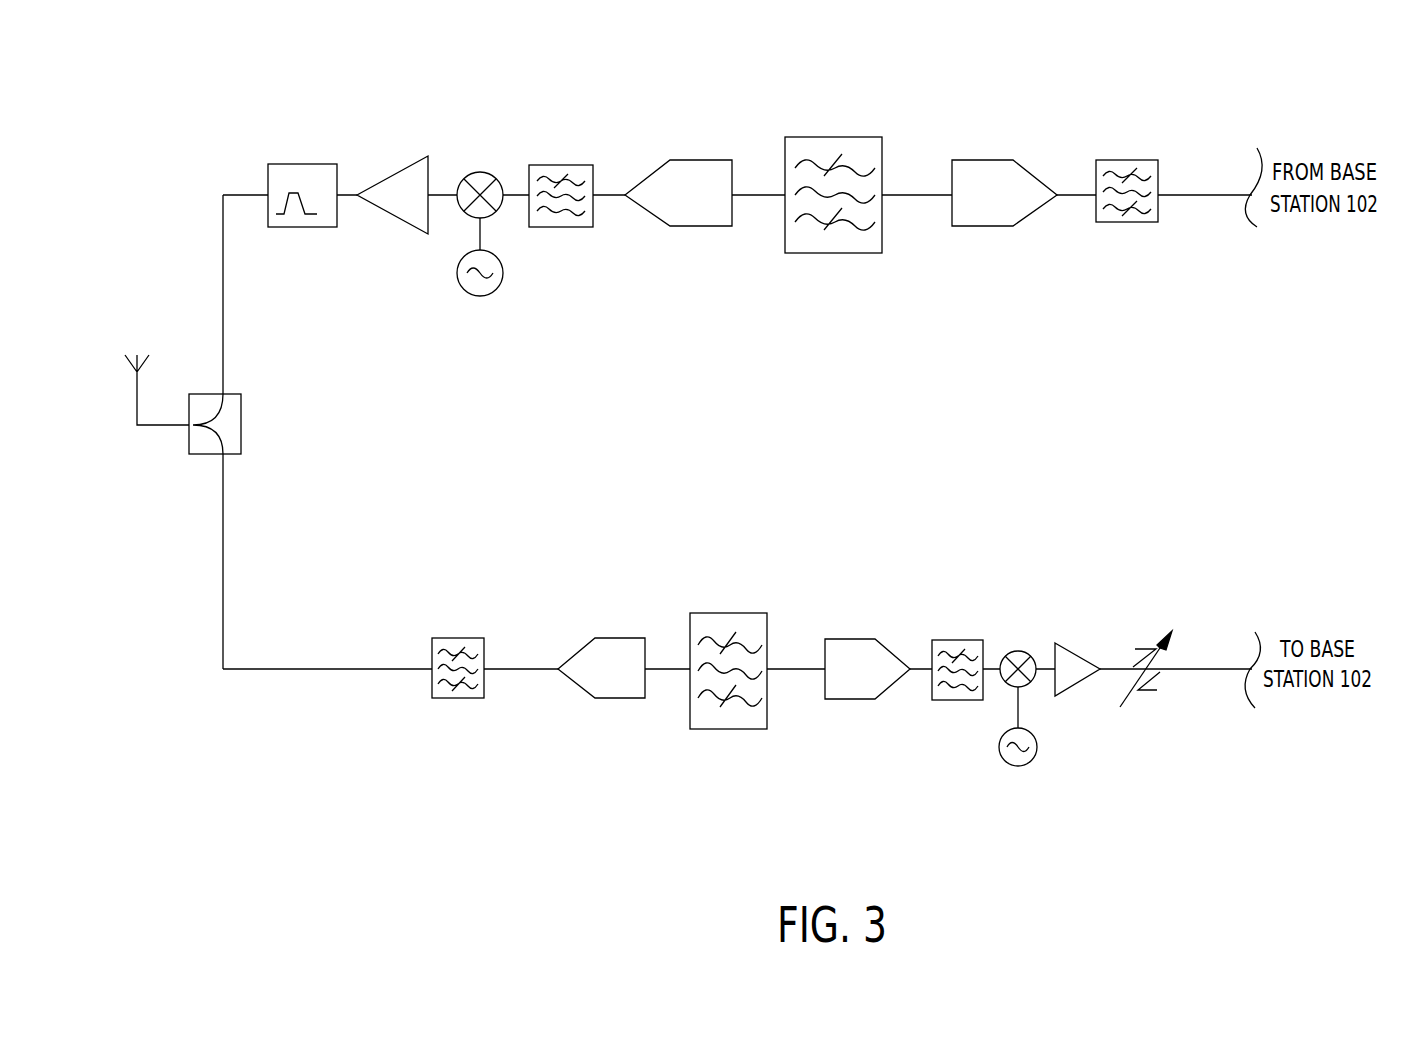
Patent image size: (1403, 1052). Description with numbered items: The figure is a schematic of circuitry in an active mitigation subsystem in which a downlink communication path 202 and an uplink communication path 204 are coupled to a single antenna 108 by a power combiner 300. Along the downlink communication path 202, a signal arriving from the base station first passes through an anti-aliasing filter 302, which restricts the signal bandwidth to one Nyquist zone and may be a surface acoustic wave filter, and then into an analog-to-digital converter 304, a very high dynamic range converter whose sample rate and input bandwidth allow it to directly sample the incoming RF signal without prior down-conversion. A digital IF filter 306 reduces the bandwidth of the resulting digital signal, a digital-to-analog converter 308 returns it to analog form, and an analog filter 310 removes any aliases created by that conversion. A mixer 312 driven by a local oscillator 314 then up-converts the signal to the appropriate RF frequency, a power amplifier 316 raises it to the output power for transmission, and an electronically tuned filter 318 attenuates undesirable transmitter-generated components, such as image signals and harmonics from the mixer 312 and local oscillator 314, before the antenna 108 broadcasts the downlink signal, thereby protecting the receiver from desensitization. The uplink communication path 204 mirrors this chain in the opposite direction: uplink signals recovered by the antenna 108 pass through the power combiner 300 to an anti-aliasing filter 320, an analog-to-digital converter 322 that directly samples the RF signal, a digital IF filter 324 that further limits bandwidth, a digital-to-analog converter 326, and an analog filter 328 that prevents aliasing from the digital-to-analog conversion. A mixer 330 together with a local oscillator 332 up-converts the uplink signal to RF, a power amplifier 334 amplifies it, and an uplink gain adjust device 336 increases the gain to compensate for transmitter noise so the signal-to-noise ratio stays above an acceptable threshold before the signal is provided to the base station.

The antenna 108 is at (138, 307).
The downlink communication path 202 is at (756, 90).
The uplink communication path 204 is at (820, 772).
The power combiner 300 is at (243, 424).
The anti-aliasing filter 302 is at (1128, 160).
The analog-to-digital converter 304 is at (988, 160).
The digital IF filter 306 is at (833, 137).
The digital-to-analog converter 308 is at (700, 160).
The analog filter 310 is at (560, 165).
The mixer 312 is at (481, 173).
The local oscillator 314 is at (480, 297).
The power amplifier 316 is at (388, 175).
The electronically tuned filter 318 is at (312, 164).
The anti-aliasing filter 320 is at (462, 638).
The analog-to-digital converter 322 is at (617, 638).
The digital IF filter 324 is at (730, 613).
The digital-to-analog converter 326 is at (852, 639).
The analog filter 328 is at (958, 641).
The mixer 330 is at (1020, 651).
The local oscillator 332 is at (1008, 767).
The power amplifier 334 is at (1080, 652).
The uplink gain adjust device 336 is at (1182, 686).